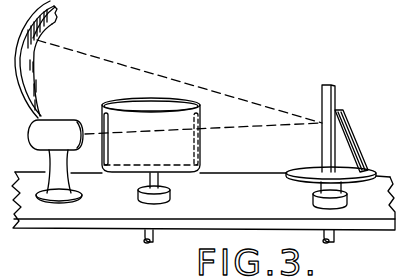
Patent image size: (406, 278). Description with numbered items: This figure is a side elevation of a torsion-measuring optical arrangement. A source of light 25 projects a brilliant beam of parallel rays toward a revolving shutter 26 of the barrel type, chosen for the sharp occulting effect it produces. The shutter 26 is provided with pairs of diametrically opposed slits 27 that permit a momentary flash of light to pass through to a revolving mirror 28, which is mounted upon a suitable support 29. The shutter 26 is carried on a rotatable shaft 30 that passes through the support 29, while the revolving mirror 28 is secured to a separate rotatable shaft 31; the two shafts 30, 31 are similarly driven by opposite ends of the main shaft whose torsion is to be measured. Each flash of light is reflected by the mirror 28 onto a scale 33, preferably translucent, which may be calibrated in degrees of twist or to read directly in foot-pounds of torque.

The source of light 25 is at (52, 131).
The revolving shutter 26 is at (128, 103).
The slits 27 is at (109, 145).
The revolving mirror 28 is at (336, 96).
The support 29 is at (372, 231).
The rotatable shaft 30 is at (155, 235).
The rotatable shaft 31 is at (336, 236).
The scale 33 is at (54, 3).